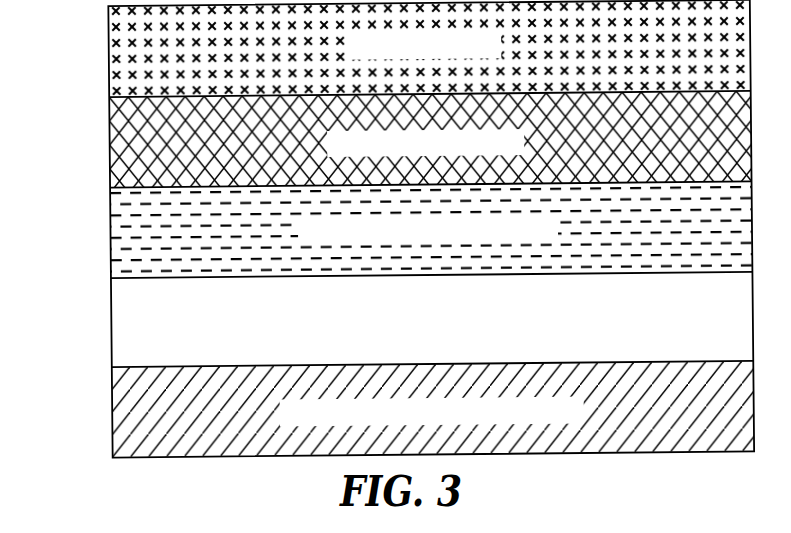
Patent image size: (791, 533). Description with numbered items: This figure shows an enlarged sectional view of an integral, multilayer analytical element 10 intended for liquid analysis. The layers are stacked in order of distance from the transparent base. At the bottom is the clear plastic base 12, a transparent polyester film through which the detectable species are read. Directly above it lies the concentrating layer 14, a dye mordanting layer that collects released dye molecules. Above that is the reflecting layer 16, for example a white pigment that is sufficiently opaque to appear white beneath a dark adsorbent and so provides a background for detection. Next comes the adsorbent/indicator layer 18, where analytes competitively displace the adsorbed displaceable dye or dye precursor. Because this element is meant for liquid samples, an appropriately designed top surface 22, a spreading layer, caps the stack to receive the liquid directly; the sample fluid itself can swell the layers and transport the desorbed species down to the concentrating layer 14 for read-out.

The analytical element 10 is at (37, 238).
The clear plastic base 12 is at (112, 386).
The concentrating layer 14 is at (111, 298).
The reflecting layer 16 is at (110, 212).
The adsorbent/indicator layer 18 is at (108, 123).
The top surface 22 is at (108, 32).